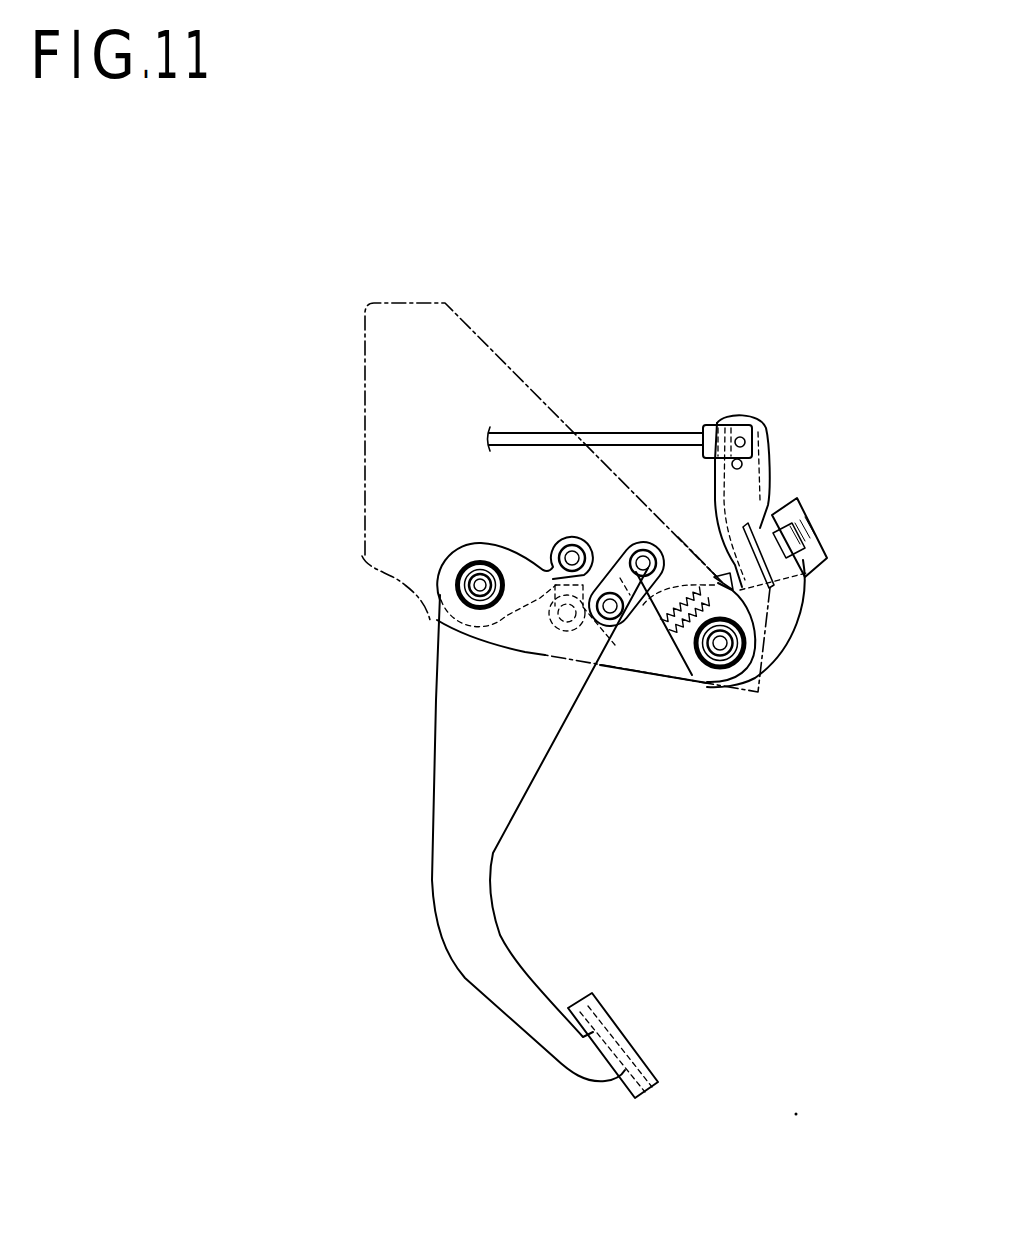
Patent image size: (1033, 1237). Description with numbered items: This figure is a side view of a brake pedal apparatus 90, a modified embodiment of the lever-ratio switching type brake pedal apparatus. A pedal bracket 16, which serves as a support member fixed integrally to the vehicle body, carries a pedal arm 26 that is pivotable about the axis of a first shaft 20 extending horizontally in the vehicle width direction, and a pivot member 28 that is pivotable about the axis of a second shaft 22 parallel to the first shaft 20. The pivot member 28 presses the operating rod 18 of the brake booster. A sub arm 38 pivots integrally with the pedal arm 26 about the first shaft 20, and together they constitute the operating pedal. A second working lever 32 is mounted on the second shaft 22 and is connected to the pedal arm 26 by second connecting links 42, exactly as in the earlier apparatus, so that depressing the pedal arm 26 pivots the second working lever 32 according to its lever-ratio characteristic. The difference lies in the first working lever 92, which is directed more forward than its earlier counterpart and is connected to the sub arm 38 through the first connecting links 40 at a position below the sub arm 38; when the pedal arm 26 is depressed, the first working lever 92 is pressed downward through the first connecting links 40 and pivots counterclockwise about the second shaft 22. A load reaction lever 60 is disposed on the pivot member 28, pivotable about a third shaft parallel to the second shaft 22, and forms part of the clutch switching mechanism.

The pedal bracket 16 is at (443, 322).
The operating rod 18 is at (623, 440).
The first shaft 20 is at (476, 598).
The second shaft 22 is at (720, 650).
The pedal arm 26 is at (455, 933).
The pivot member 28 is at (790, 614).
The second working lever 32 is at (679, 545).
The sub arm 38 is at (535, 556).
The first connecting links 40 is at (585, 577).
The second connecting links 42 is at (679, 545).
The load reaction lever 60 is at (797, 486).
The brake pedal apparatus 90 is at (775, 299).
The first working lever 92 is at (660, 653).